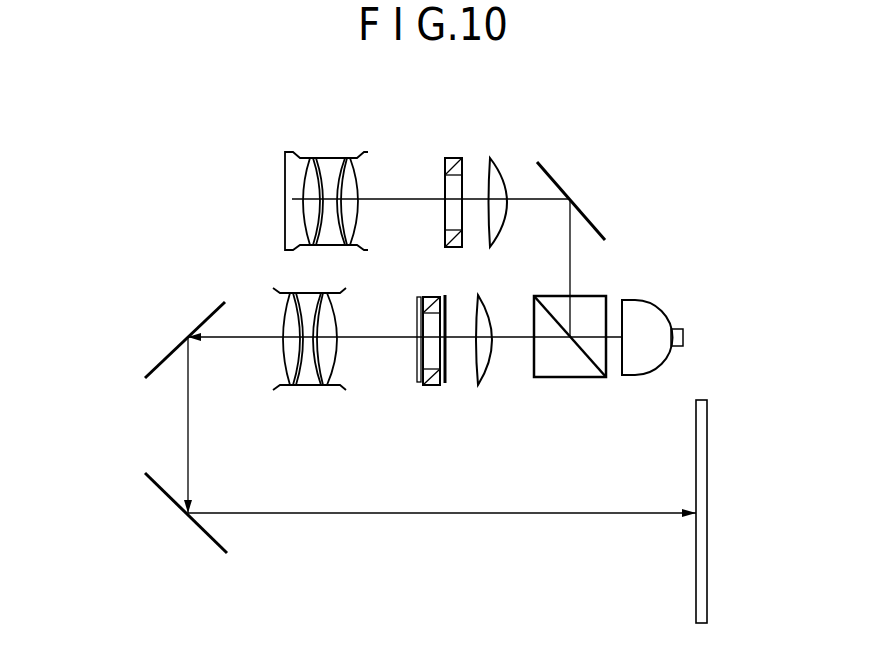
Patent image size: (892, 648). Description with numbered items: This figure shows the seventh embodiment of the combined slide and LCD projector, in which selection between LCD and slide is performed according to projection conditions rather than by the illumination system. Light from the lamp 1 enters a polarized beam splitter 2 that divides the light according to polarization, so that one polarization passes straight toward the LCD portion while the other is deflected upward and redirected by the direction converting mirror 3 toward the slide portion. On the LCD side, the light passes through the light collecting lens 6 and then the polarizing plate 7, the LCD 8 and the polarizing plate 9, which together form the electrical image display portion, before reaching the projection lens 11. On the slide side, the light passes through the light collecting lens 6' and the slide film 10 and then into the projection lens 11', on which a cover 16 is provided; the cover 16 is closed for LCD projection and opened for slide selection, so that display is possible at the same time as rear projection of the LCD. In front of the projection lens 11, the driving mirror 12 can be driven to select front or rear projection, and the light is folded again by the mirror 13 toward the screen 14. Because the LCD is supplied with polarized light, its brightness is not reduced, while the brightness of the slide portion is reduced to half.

The light source 1 is at (647, 325).
The polarized beam splitter 2 is at (577, 347).
The direction converting mirror 3 is at (586, 219).
The light collecting lens 6 is at (480, 369).
The light collecting lens 6' is at (495, 178).
The polarizing plate 7 is at (452, 367).
The LCD 8 is at (431, 386).
The polarizing plate 9 is at (416, 375).
The slide film 10 is at (450, 158).
The projection lens 11 is at (309, 362).
The projection lens 11' is at (330, 177).
The light path converting mirror 12 is at (175, 350).
The light path converting mirror 13 is at (172, 502).
The screen portion 14 is at (703, 490).
The cover 16 is at (289, 222).